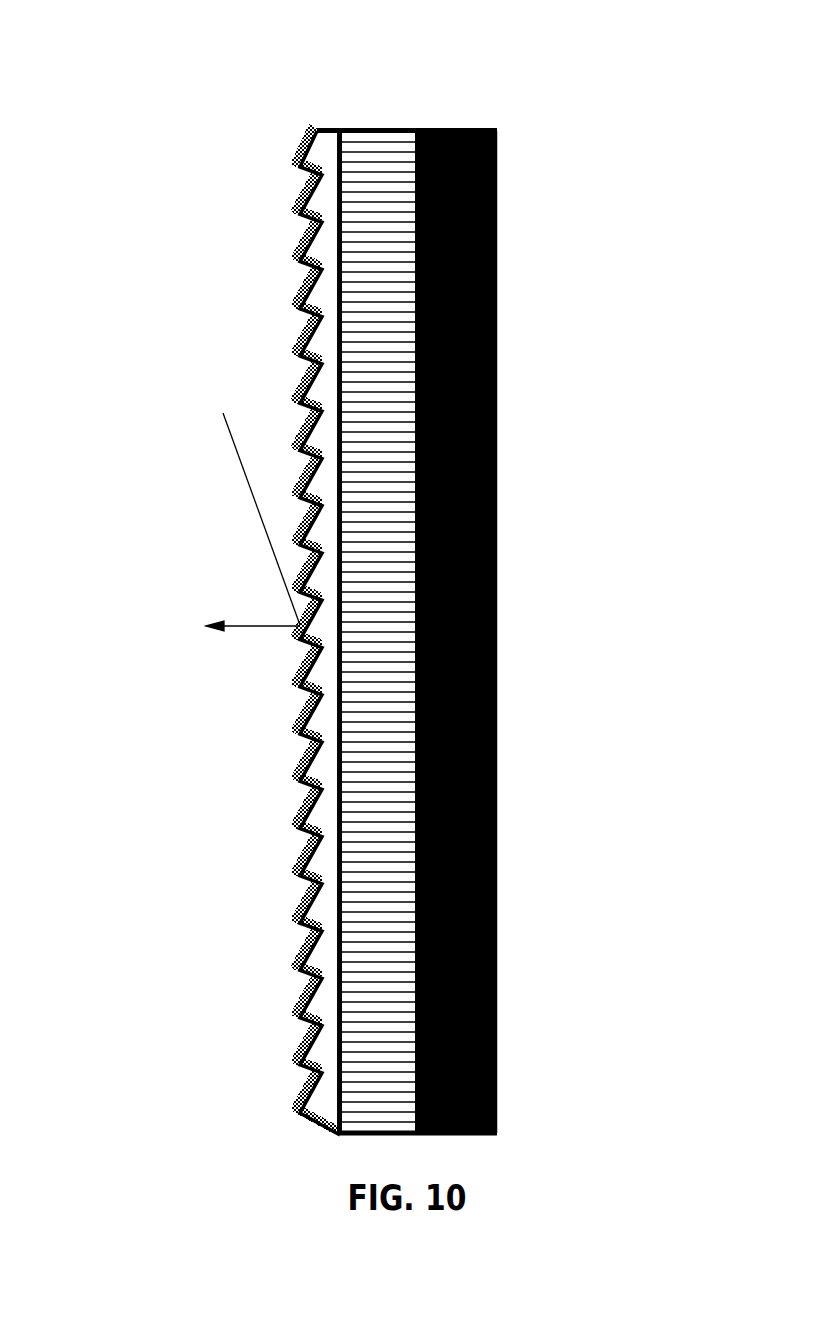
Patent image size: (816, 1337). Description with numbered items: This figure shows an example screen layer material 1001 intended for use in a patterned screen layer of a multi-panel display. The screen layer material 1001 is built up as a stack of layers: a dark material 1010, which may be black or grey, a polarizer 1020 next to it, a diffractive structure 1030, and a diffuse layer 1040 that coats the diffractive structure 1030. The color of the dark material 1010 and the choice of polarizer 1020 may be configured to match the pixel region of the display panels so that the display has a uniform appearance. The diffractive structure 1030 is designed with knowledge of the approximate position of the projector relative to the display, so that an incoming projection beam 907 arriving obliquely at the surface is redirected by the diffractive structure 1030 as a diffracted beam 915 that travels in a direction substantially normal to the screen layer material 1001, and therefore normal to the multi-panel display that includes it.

The screen layer material 1001 is at (556, 480).
The dark material 1010 is at (497, 132).
The polarizer 1020 is at (397, 150).
The diffractive structure 1030 is at (335, 157).
The diffuse layer 1040 is at (304, 208).
The projection beam 907 is at (248, 488).
The diffracted beam 915 is at (210, 613).